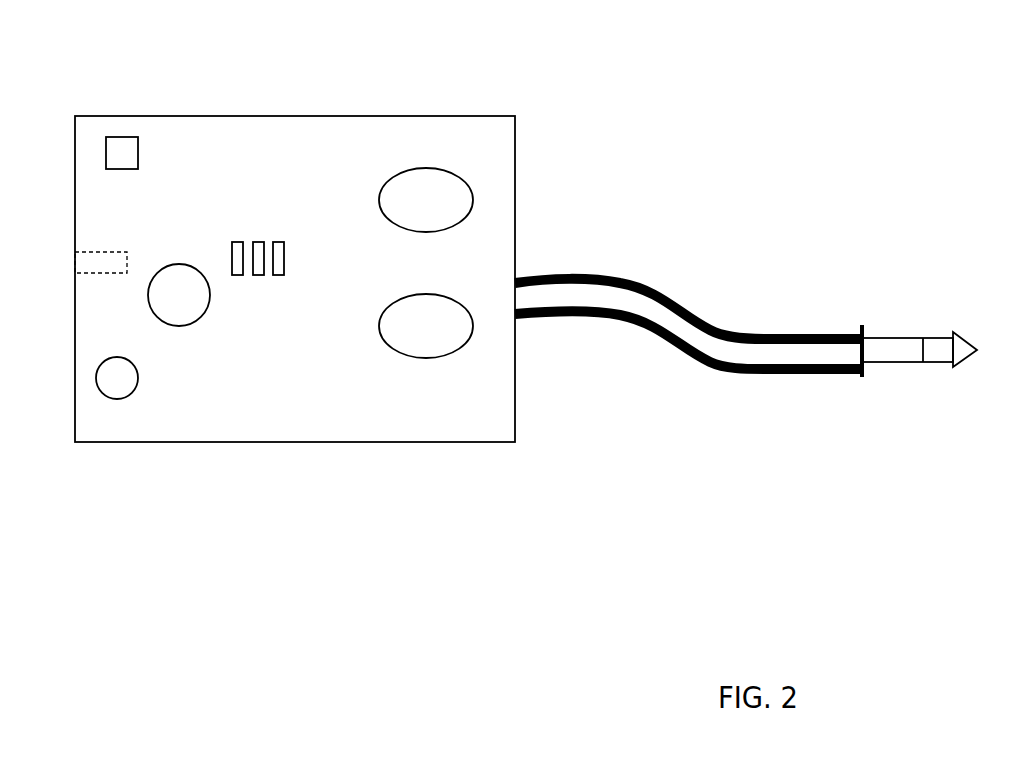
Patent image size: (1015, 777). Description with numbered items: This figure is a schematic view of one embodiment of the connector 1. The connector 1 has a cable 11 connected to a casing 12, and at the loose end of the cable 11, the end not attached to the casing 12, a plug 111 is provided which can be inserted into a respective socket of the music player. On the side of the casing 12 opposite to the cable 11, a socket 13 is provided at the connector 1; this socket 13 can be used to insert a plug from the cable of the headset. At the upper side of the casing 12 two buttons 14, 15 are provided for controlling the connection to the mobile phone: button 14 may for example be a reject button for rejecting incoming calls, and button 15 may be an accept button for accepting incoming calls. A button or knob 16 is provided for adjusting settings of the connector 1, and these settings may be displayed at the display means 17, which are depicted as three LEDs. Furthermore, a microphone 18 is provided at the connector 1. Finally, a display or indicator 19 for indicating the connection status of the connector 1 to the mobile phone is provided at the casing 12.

The connector 1 is at (550, 186).
The cable 11 is at (672, 290).
The plug 111 is at (903, 347).
The casing 12 is at (295, 128).
The socket 13 is at (120, 262).
The button 14 is at (431, 190).
The button 15 is at (450, 347).
The button or knob 16 is at (190, 304).
The display means 17 is at (272, 291).
The microphone 18 is at (118, 378).
The display or indicator 19 is at (117, 147).